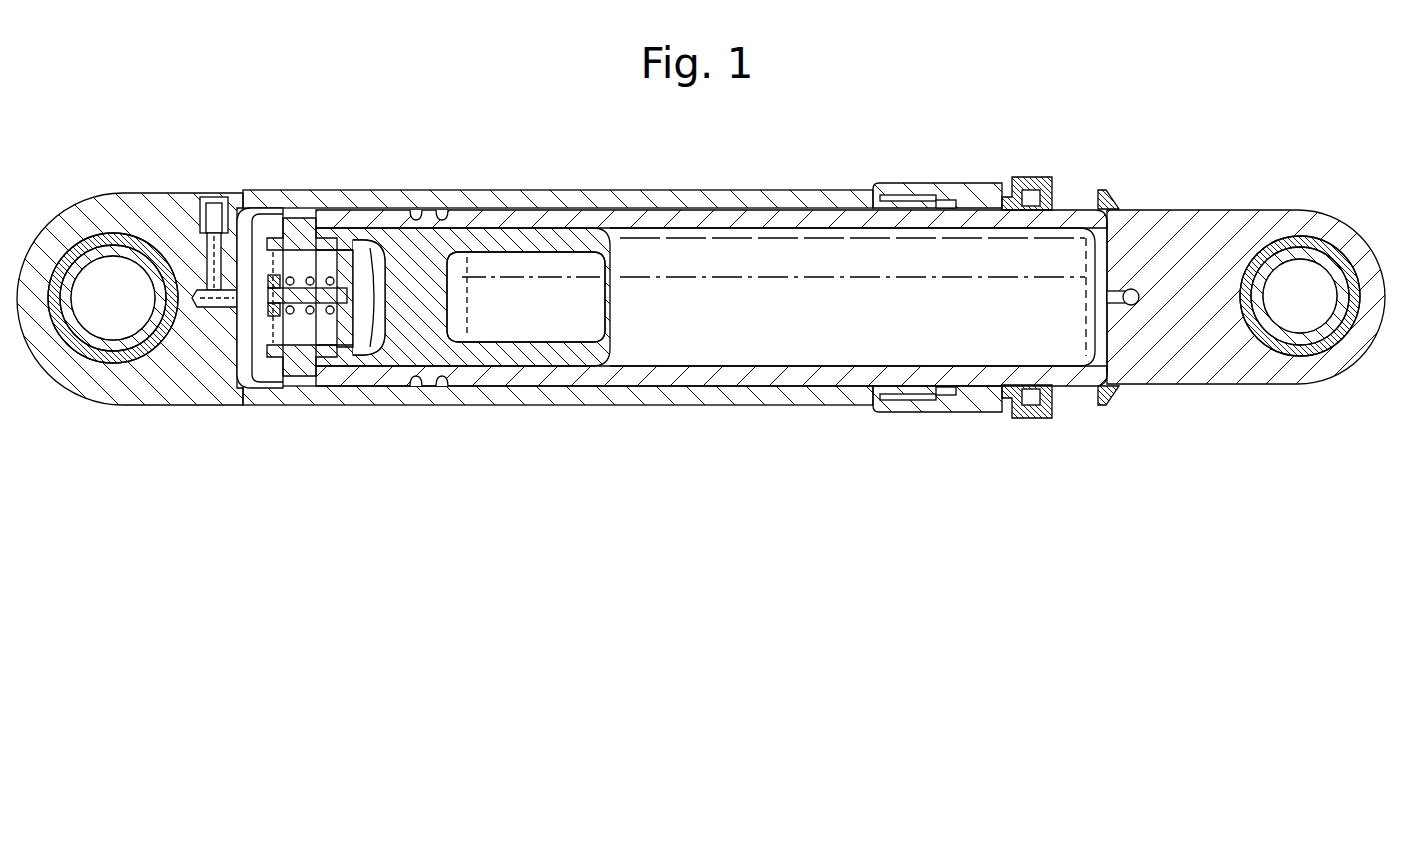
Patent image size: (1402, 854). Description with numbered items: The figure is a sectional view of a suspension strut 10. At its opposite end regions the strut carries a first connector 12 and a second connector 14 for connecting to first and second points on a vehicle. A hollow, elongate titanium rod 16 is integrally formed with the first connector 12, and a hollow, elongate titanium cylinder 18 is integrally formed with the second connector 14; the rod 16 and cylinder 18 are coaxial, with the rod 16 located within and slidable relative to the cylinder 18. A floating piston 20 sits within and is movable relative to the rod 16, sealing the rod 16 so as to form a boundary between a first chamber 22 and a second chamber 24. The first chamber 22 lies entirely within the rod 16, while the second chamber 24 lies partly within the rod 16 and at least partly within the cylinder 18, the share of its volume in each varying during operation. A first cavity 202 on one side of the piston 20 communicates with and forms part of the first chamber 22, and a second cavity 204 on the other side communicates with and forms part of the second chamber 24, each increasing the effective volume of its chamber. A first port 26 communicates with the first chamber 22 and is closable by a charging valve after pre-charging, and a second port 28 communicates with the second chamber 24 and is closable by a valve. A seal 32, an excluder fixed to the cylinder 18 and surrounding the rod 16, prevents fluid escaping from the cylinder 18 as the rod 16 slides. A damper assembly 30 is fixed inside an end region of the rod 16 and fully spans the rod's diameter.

The suspension strut 10 is at (96, 443).
The first connector 12 is at (1290, 277).
The second connector 14 is at (112, 276).
The rod 16 is at (1210, 346).
The cylinder 18 is at (318, 189).
The piston 20 is at (432, 256).
The first chamber 22 is at (790, 263).
The second chamber 24 is at (270, 374).
The first port 26 is at (1130, 290).
The second port 28 is at (210, 306).
The damper assembly 30 is at (353, 340).
The seal 32 is at (1010, 192).
The first cavity 202 is at (558, 293).
The second cavity 204 is at (375, 262).